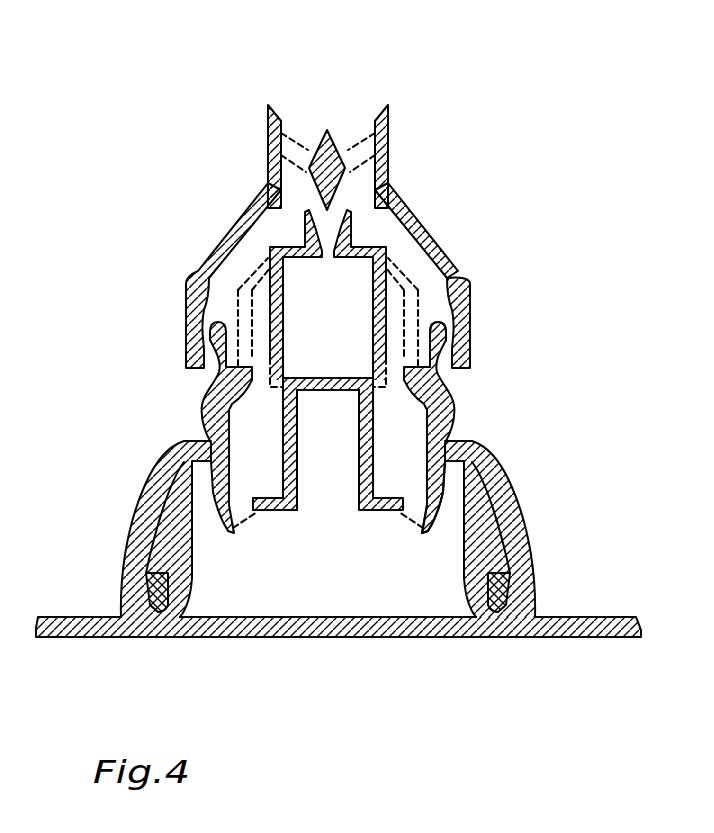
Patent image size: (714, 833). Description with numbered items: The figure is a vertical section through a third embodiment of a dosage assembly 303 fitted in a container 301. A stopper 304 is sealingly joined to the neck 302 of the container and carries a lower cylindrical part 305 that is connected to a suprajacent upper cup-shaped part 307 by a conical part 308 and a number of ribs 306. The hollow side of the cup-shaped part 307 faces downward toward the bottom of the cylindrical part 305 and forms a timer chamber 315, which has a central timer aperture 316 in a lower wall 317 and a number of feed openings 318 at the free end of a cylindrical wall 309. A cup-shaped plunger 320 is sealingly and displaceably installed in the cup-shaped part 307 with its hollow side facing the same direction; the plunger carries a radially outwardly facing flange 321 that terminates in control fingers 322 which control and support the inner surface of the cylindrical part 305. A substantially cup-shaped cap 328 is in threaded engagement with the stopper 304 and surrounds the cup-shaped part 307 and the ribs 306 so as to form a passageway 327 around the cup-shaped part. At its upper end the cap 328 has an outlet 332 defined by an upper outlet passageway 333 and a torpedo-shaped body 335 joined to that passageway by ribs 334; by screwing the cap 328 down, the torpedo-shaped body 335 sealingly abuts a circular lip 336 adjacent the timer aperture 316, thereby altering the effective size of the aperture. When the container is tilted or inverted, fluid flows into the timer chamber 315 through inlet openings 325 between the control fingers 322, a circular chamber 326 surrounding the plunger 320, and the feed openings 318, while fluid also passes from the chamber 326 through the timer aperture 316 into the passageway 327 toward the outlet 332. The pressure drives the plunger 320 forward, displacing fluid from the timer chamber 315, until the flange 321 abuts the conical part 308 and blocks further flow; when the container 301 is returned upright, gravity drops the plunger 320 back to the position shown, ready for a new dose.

The container 301 is at (598, 630).
The neck of the container 302 is at (495, 522).
The dosage assembly 303 is at (469, 426).
The stopper 304 is at (502, 472).
The lower cylindrical part 305 is at (440, 500).
The ribs 306 is at (405, 275).
The upper cup-shaped part 307 is at (345, 278).
The conical part 308 is at (437, 397).
The cylindrical wall 309 is at (425, 310).
The timer chamber 315 is at (380, 225).
The central timer aperture 316 is at (305, 212).
The lower wall 317 is at (303, 246).
The feed openings 318 is at (470, 312).
The cup-shaped plunger 320 is at (295, 483).
The radially outwardly facing flange 321 is at (275, 510).
The control fingers 322 is at (245, 530).
The inlet openings 325 is at (417, 525).
The circular chamber 326 is at (247, 412).
The passageway 327 is at (226, 273).
The cup-shaped cap 328 is at (400, 255).
The outlet 332 is at (364, 110).
The upper outlet passageway 333 is at (290, 110).
The ribs 334 is at (340, 110).
The torpedo-shaped body 335 is at (330, 110).
The circular lip 336 is at (277, 190).